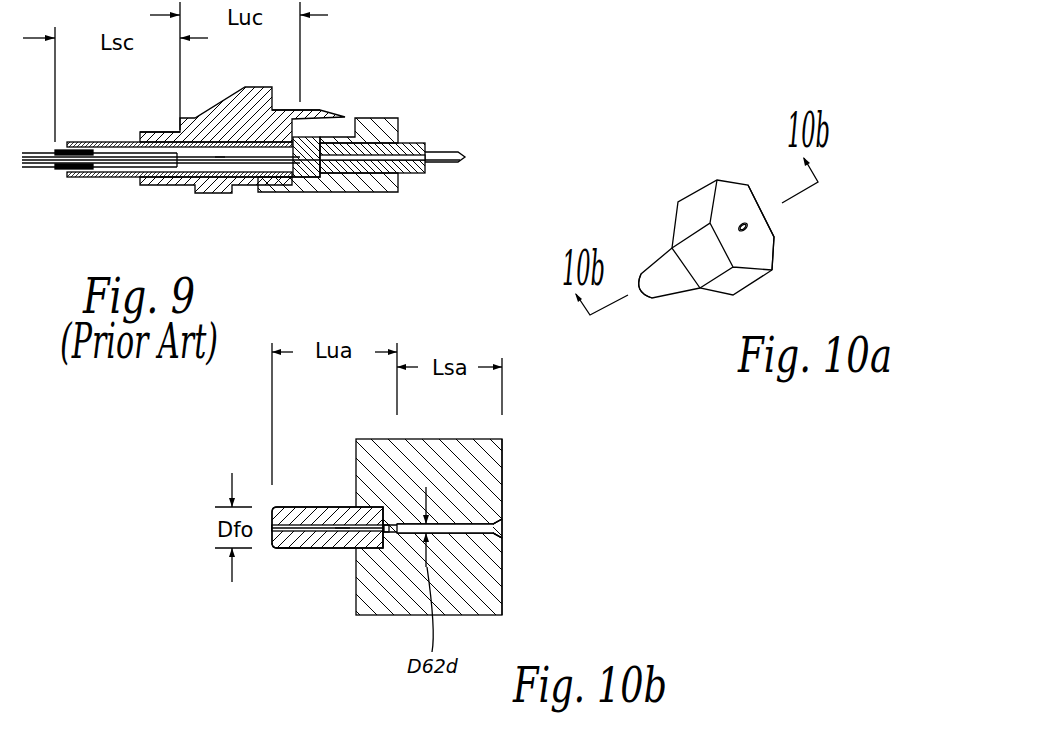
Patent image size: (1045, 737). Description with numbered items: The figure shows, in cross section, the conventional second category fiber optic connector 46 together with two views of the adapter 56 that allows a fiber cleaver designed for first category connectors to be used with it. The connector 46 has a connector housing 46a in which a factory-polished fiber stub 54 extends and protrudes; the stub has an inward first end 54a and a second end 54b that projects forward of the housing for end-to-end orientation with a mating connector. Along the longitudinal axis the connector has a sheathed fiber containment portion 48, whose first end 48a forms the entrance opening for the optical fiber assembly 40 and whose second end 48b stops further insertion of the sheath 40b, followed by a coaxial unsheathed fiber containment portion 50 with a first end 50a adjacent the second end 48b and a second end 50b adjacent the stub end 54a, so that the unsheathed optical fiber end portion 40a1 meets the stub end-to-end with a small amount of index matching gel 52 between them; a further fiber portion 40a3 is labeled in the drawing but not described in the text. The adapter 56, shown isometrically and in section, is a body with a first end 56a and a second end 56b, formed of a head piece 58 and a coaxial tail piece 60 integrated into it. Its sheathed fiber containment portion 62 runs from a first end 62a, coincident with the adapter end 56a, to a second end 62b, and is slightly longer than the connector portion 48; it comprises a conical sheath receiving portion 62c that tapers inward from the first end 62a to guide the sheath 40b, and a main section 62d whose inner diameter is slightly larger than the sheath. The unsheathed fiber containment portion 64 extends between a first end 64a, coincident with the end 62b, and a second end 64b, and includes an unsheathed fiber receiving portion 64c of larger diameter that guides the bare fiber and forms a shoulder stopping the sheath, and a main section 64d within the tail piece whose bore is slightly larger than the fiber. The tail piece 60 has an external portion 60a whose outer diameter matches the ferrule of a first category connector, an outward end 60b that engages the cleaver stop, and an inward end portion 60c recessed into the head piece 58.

In FIG. 9, the optical fiber assembly 40 is at (33, 168).
In FIG. 9, the unsheathed optical fiber end portion 40a1 is at (265, 163).
In FIG. 9, the fiber portion 40a3 is at (220, 158).
In FIG. 9, the sheath 40b is at (147, 165).
In FIG. 9, the second category fiber optic connector 46 is at (368, 32).
In FIG. 9, the connector housing 46a is at (378, 128).
In FIG. 9, the sheathed fiber containment portion 48 is at (120, 142).
In FIG. 9, the first end of sheathed fiber containment portion 48a is at (52, 168).
In FIG. 9, the second end of sheathed fiber containment portion 48b is at (170, 177).
In FIG. 9, the unsheathed fiber containment portion 50 is at (240, 193).
In FIG. 9, the first end of unsheathed fiber containment portion 50a is at (177, 132).
In FIG. 9, the second end of unsheathed fiber containment portion 50b is at (293, 119).
In FIG. 9, the index matching gel 52 is at (298, 140).
In FIG. 9, the fiber stub 54 is at (360, 165).
In FIG. 9, the first end of fiber stub 54a is at (303, 153).
In FIG. 9, the second end of fiber stub 54b is at (418, 150).
In FIG. 10A, the adapter 56 is at (702, 88).
In FIG. 10A, the first end of adapter 56a is at (767, 252).
In FIG. 10B, the first end of adapter 56a is at (502, 508).
In FIG. 10A, the second end of adapter 56b is at (648, 296).
In FIG. 10B, the second end of adapter 56b is at (280, 548).
In FIG. 10A, the head piece 58 is at (738, 200).
In FIG. 10B, the head piece 58 is at (502, 463).
In FIG. 10A, the tail piece 60 is at (657, 262).
In FIG. 10B, the tail piece 60 is at (300, 507).
In FIG. 10B, the external portion of tail piece 60a is at (292, 548).
In FIG. 10B, the outward end of tail piece 60b is at (272, 548).
In FIG. 10B, the inward end portion of tail piece 60c is at (375, 507).
In FIG. 10A, the sheathed fiber containment portion of adapter 62 is at (738, 226).
In FIG. 10B, the sheathed fiber containment portion of adapter 62 is at (450, 533).
In FIG. 10B, the first end of adapter sheathed fiber containment portion 62a is at (499, 533).
In FIG. 10B, the second end of adapter sheathed fiber containment portion 62b is at (396, 524).
In FIG. 10A, the conical sheath receiving portion 62c is at (749, 225).
In FIG. 10B, the conical sheath receiving portion 62c is at (500, 530).
In FIG. 10B, the main section of sheathed fiber containment portion 62d is at (502, 597).
In FIG. 10B, the unsheathed fiber containment portion of adapter 64 is at (303, 531).
In FIG. 10B, the first end of unsheathed fiber containment portion 64a is at (392, 533).
In FIG. 10B, the second end of unsheathed fiber containment portion 64b is at (272, 525).
In FIG. 10B, the unsheathed fiber receiving portion 64c is at (383, 533).
In FIG. 10B, the main section of unsheathed fiber containment portion 64d is at (343, 531).